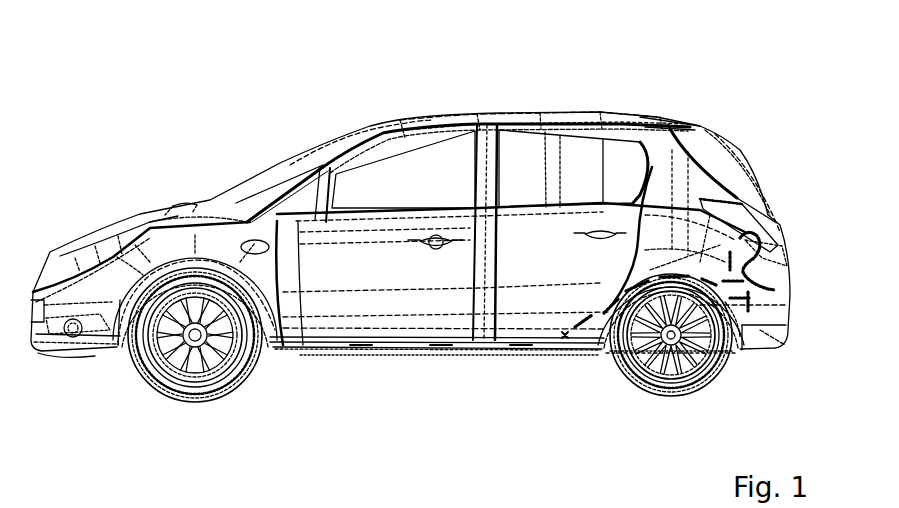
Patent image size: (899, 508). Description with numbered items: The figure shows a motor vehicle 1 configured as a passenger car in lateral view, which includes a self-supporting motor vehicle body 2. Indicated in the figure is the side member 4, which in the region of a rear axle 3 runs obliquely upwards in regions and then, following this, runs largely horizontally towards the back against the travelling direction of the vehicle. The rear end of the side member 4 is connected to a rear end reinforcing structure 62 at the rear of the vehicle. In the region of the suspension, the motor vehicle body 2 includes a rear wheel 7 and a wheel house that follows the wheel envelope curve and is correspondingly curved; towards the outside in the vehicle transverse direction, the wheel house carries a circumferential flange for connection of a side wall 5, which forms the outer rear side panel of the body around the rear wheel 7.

The motor vehicle 1 is at (322, 96).
The motor vehicle body 2 is at (472, 127).
The rear axle 3 is at (656, 412).
The side member 4 is at (582, 338).
The side wall 5 is at (662, 237).
The rear wheel 7 is at (710, 371).
The rear end reinforcing structure 62 is at (784, 254).